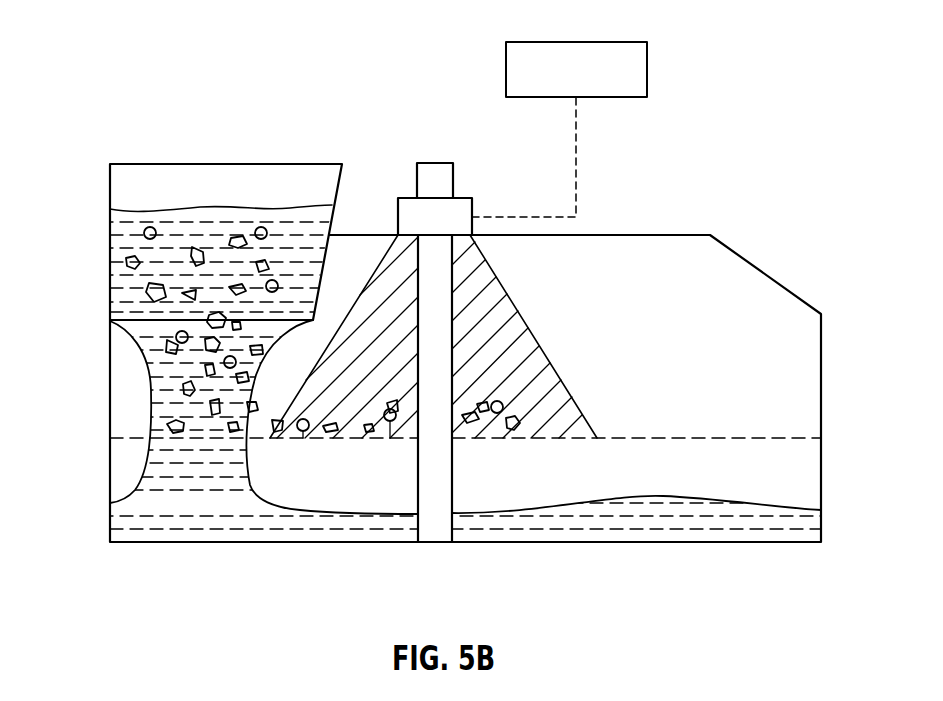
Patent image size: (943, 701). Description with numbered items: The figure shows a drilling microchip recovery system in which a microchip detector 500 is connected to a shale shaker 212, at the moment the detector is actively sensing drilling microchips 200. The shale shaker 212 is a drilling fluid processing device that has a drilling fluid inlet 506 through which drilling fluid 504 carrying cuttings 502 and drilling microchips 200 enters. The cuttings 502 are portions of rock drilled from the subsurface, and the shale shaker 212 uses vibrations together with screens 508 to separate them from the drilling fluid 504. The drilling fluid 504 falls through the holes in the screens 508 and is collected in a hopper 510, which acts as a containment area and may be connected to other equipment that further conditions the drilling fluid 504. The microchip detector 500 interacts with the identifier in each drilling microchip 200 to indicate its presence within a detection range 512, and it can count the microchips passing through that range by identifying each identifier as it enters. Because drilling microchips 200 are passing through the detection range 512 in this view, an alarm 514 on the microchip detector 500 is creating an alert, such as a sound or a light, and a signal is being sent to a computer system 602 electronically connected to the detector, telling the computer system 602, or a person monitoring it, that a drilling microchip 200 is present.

The shale shaker 212 is at (189, 53).
The drilling microchip 200 is at (272, 280).
The drilling fluid inlet 506 is at (110, 220).
The cuttings 502 is at (147, 292).
The drilling fluid 504 is at (150, 523).
The hopper 510 is at (600, 543).
The screens 508 is at (707, 437).
The detection range 512 is at (527, 323).
The microchip detector 500 is at (472, 205).
The alarm 514 is at (435, 163).
The computer system 602 is at (599, 85).